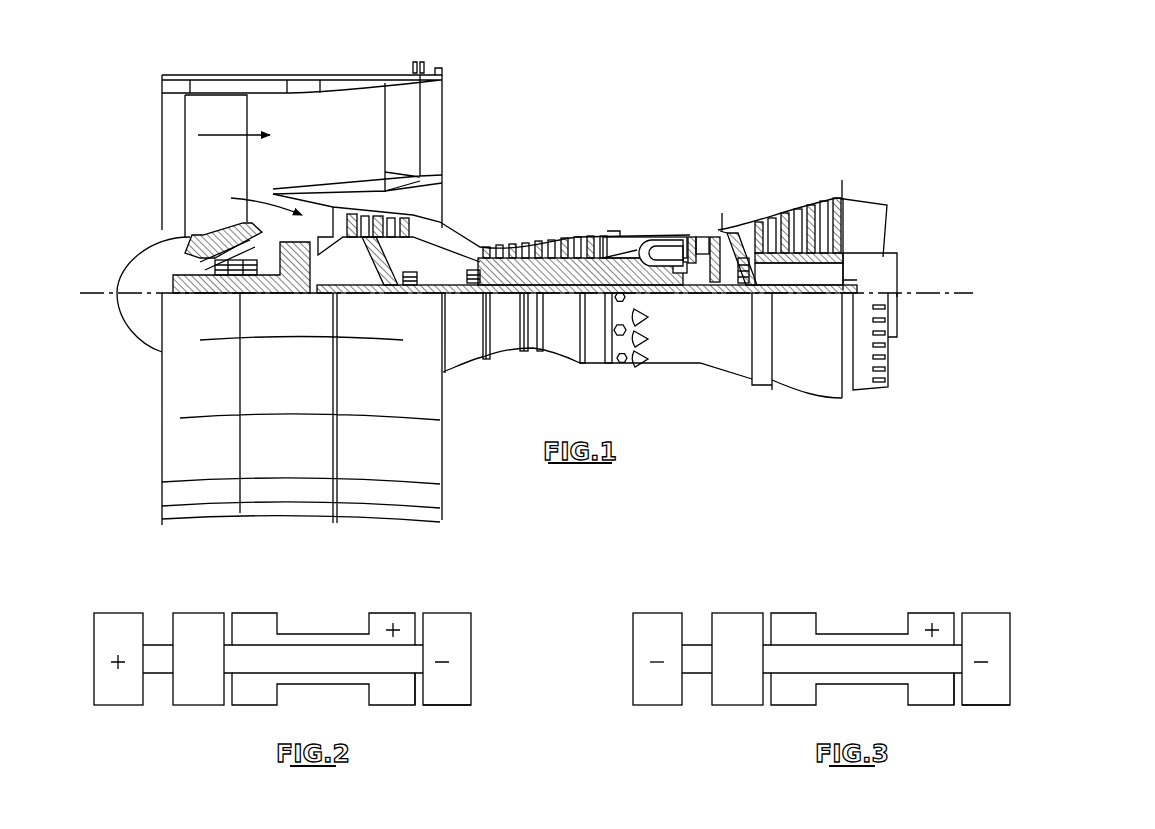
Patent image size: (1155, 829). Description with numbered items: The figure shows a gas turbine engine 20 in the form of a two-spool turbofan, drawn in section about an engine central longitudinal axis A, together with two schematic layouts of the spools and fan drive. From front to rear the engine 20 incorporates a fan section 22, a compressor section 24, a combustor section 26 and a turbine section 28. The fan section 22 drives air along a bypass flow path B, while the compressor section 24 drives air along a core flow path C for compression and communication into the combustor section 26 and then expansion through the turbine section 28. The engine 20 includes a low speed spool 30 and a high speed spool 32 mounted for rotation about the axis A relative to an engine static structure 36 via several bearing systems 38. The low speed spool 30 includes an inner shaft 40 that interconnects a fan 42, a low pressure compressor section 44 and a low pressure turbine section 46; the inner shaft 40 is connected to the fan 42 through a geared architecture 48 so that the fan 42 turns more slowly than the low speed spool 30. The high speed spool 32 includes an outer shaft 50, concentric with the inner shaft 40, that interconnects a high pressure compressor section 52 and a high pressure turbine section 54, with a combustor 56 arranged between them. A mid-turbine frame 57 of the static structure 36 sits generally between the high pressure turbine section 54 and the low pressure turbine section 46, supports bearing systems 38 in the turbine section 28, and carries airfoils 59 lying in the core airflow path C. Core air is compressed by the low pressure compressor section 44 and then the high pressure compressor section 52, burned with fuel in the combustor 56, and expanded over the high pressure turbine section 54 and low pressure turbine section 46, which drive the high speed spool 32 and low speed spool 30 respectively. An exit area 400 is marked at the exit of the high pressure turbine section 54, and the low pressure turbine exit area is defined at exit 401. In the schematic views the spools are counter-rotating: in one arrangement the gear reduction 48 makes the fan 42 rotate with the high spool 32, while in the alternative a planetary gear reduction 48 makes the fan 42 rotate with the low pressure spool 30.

In FIG. 1, the gas turbine engine 20 is at (655, 115).
In FIG. 1, the fan section 22 is at (247, 70).
In FIG. 1, the compressor section 24 is at (480, 223).
In FIG. 1, the combustor section 26 is at (648, 205).
In FIG. 1, the turbine section 28 is at (765, 187).
In FIG. 1, the low speed spool 30 is at (563, 300).
In FIG. 2, the low speed spool 30 is at (257, 657).
In FIG. 3, the low speed spool 30 is at (796, 657).
In FIG. 1, the high speed spool 32 is at (597, 240).
In FIG. 2, the high speed spool 32 is at (310, 638).
In FIG. 3, the high speed spool 32 is at (849, 638).
In FIG. 1, the engine static structure 36 is at (593, 300).
In FIG. 1, the bearing systems 38 is at (410, 289).
In FIG. 1, the inner shaft 40 is at (463, 373).
In FIG. 1, the fan 42 is at (228, 174).
In FIG. 2, the fan 42 is at (120, 623).
In FIG. 3, the fan 42 is at (659, 623).
In FIG. 1, the low pressure compressor section 44 is at (427, 222).
In FIG. 2, the low pressure compressor section 44 is at (202, 625).
In FIG. 3, the low pressure compressor section 44 is at (741, 625).
In FIG. 1, the low pressure turbine section 46 is at (802, 203).
In FIG. 2, the low pressure turbine section 46 is at (448, 625).
In FIG. 3, the low pressure turbine section 46 is at (987, 625).
In FIG. 1, the geared architecture 48 is at (313, 282).
In FIG. 2, the geared architecture 48 is at (161, 657).
In FIG. 3, the geared architecture 48 is at (700, 657).
In FIG. 1, the outer shaft 50 is at (658, 298).
In FIG. 1, the high pressure compressor section 52 is at (543, 267).
In FIG. 2, the high pressure compressor section 52 is at (260, 693).
In FIG. 3, the high pressure compressor section 52 is at (799, 693).
In FIG. 1, the high pressure turbine section 54 is at (708, 293).
In FIG. 2, the high pressure turbine section 54 is at (395, 692).
In FIG. 3, the high pressure turbine section 54 is at (934, 692).
In FIG. 1, the combustor 56 is at (653, 247).
In FIG. 1, the mid-turbine frame 57 is at (737, 225).
In FIG. 1, the airfoils 59 is at (760, 270).
In FIG. 1, the exit area 400 is at (718, 227).
In FIG. 2, the exit area 400 is at (425, 687).
In FIG. 3, the exit area 400 is at (964, 687).
In FIG. 1, the exit 401 is at (842, 186).
In FIG. 2, the exit 401 is at (473, 703).
In FIG. 3, the exit 401 is at (1012, 703).
In FIG. 1, the engine central longitudinal axis A is at (963, 293).
In FIG. 1, the bypass flow path B is at (229, 135).
In FIG. 1, the core flow path C is at (258, 201).